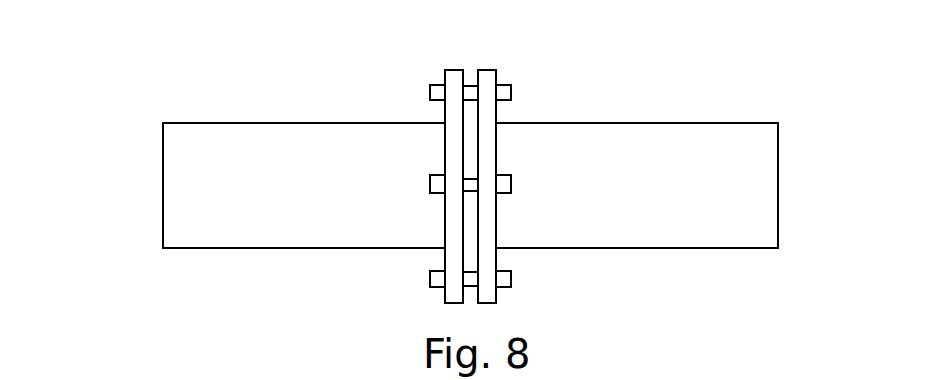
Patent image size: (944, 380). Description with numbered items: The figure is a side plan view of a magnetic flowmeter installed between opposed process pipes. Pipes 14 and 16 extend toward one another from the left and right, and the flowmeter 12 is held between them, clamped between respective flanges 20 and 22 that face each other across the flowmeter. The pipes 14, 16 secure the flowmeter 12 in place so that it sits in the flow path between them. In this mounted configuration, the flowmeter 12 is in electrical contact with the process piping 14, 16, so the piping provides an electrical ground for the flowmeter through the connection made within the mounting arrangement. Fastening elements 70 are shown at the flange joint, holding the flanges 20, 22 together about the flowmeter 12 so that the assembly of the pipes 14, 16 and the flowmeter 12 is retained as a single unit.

The flowmeter 12 is at (470, 88).
The pipe 14 is at (203, 181).
The pipe 16 is at (750, 184).
The flange 20 is at (456, 70).
The flange 22 is at (488, 70).
The fastener nut 70 is at (507, 85).